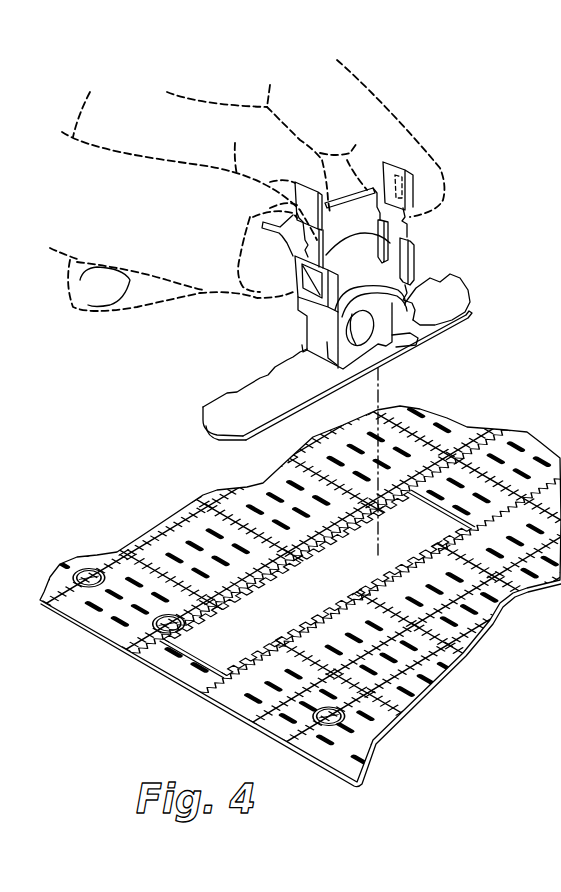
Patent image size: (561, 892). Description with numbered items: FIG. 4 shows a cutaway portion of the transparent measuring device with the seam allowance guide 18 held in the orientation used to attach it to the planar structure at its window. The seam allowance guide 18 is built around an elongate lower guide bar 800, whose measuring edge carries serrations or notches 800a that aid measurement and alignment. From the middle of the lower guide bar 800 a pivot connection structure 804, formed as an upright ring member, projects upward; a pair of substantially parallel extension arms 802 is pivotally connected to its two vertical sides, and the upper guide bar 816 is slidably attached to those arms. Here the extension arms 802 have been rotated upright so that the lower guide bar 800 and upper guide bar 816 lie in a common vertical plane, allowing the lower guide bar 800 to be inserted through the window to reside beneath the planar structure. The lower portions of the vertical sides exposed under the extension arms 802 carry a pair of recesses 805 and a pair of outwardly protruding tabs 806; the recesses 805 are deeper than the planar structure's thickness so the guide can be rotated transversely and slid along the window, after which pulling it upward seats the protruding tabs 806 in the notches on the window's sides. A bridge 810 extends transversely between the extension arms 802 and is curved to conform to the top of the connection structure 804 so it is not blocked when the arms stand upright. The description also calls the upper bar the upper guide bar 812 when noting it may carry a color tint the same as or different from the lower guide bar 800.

The seam allowance guide 18 is at (350, 268).
The lower guide bar 800 is at (275, 392).
The serrations or notches 800a is at (223, 393).
The extension arms 802 is at (410, 225).
The pivot connection structure 804 is at (367, 338).
The recesses 805 is at (410, 338).
The protruding tabs 806 is at (310, 365).
The bridge 810 is at (413, 307).
The upper guide bar 812 is at (425, 311).
The upper guide bar 816 is at (313, 305).